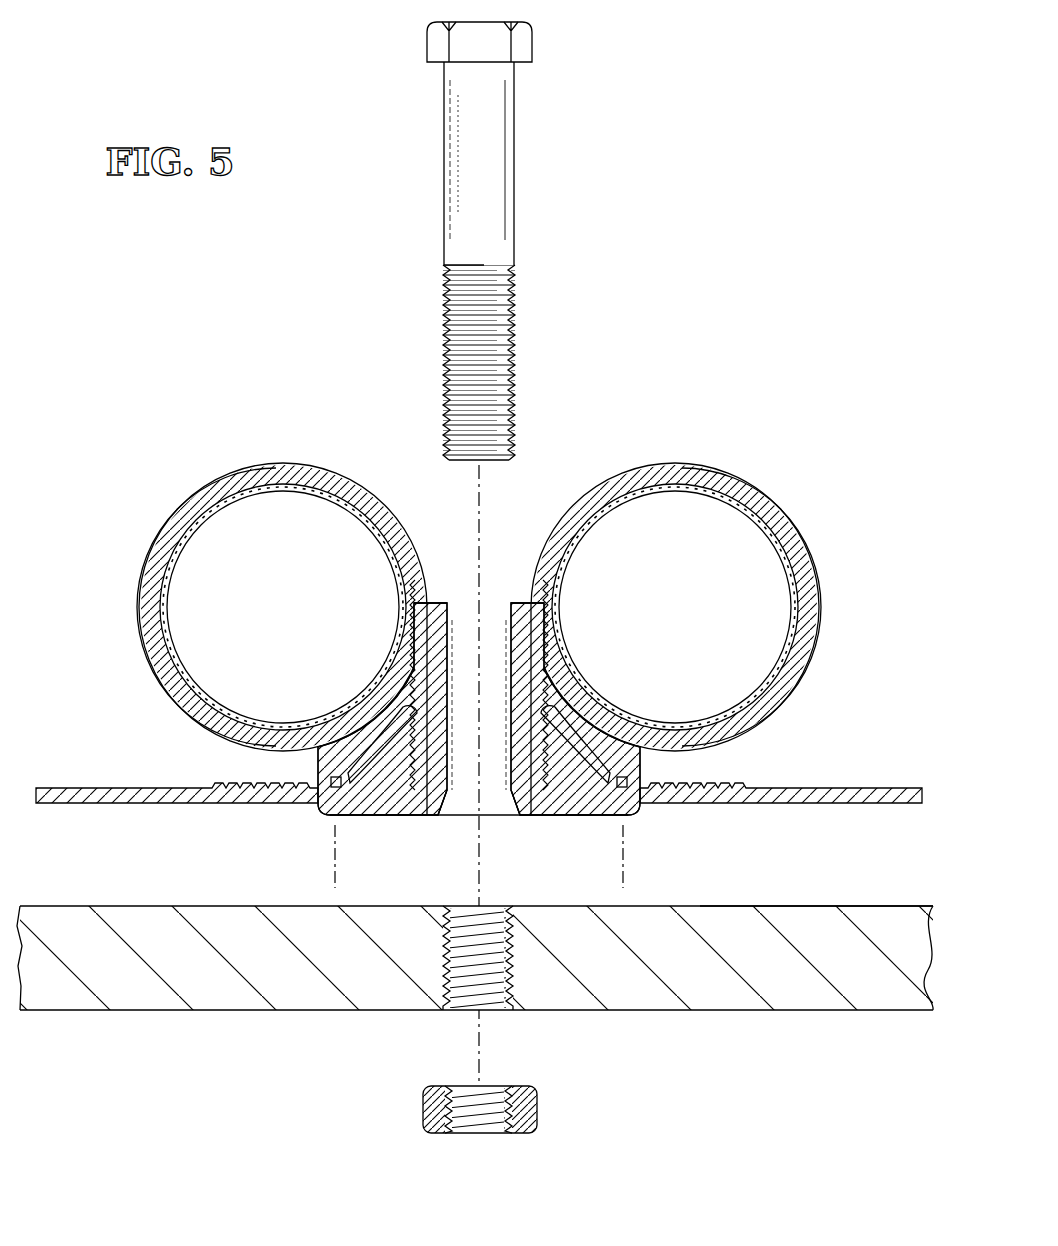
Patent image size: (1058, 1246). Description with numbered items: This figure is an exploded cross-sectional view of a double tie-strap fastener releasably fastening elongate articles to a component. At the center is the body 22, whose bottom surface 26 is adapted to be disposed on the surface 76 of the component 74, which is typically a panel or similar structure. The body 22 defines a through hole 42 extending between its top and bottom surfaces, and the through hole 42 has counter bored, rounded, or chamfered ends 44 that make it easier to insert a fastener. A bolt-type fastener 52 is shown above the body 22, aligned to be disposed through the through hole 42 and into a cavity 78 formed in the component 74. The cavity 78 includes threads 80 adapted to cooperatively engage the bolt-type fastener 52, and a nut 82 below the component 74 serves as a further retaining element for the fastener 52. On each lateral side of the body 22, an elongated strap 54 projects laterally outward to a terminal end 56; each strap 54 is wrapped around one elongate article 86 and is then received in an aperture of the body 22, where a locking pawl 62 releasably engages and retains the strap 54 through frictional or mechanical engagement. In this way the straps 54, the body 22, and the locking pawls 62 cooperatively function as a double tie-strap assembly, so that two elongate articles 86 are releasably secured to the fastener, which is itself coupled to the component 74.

The body 22 is at (638, 813).
The bottom surface 26 is at (395, 815).
The through hole 42 is at (497, 615).
The ends 44 is at (438, 600).
The bolt-type fastener 52 is at (490, 208).
The elongated strap 54 is at (195, 788).
The terminal end 56 is at (60, 788).
The locking pawl 62 is at (345, 760).
The component 74 is at (712, 995).
The surface 76 is at (793, 906).
The cavity 78 is at (498, 1010).
The threads 80 is at (470, 906).
The nut 82 is at (537, 1110).
The elongate article 86 is at (262, 488).